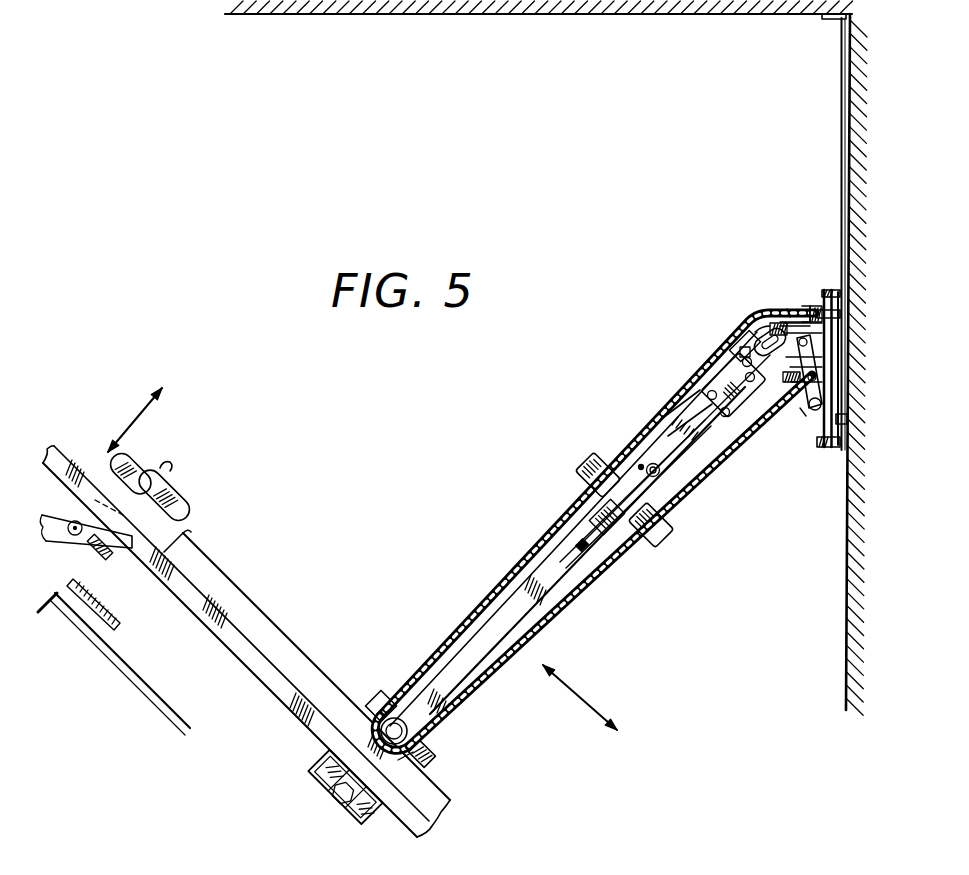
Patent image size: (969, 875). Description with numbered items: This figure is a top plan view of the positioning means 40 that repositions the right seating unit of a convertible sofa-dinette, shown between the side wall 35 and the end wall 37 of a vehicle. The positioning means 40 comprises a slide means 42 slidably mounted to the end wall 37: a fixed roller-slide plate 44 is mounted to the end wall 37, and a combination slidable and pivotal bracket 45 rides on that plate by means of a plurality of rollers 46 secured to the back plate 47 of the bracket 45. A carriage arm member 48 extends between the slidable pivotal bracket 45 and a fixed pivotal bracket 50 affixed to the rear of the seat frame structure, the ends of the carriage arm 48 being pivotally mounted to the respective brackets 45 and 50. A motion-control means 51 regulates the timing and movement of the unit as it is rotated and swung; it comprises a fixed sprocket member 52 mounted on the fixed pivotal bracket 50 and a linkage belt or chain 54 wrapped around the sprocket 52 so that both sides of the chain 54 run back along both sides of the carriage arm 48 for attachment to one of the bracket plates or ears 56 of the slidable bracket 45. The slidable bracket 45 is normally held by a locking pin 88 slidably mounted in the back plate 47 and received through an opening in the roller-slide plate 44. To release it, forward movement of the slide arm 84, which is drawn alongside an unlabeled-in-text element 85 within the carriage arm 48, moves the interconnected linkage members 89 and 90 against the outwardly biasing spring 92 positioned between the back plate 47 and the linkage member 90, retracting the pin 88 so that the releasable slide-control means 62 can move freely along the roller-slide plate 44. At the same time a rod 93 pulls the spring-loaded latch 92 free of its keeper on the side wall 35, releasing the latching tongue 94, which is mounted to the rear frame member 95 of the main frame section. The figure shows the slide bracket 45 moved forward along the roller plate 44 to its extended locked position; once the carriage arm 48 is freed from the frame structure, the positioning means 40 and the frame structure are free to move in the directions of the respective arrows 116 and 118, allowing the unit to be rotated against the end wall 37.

The side wall 35 is at (517, 16).
The end wall 37 is at (846, 606).
The roller-slide plate 44 is at (840, 123).
The positioning means 40 is at (520, 540).
The slide means 42 is at (795, 310).
The slidable and pivotal bracket 45 is at (813, 305).
The rollers 46 is at (857, 289).
The back plate 47 is at (845, 314).
The carriage arm member 48 is at (489, 625).
The fixed pivotal bracket 50 is at (380, 698).
The motion-control means 51 is at (627, 562).
The fixed sprocket member 52 is at (440, 738).
The linkage belt or chain 54 is at (577, 603).
The bracket plates or ears 56 is at (757, 315).
The slide-control means 62 is at (790, 308).
The slide arm 84 is at (662, 425).
The cylinder 85 is at (643, 462).
The locking pin 88 is at (842, 413).
The linkage member 89 is at (755, 340).
The linkage member 90 is at (818, 360).
The biasing spring 92 is at (167, 466).
The rod 93 is at (150, 695).
The latching tongue 94 is at (174, 503).
The rear frame member 95 is at (272, 618).
The arrow 116 is at (571, 688).
The arrow 118 is at (126, 430).